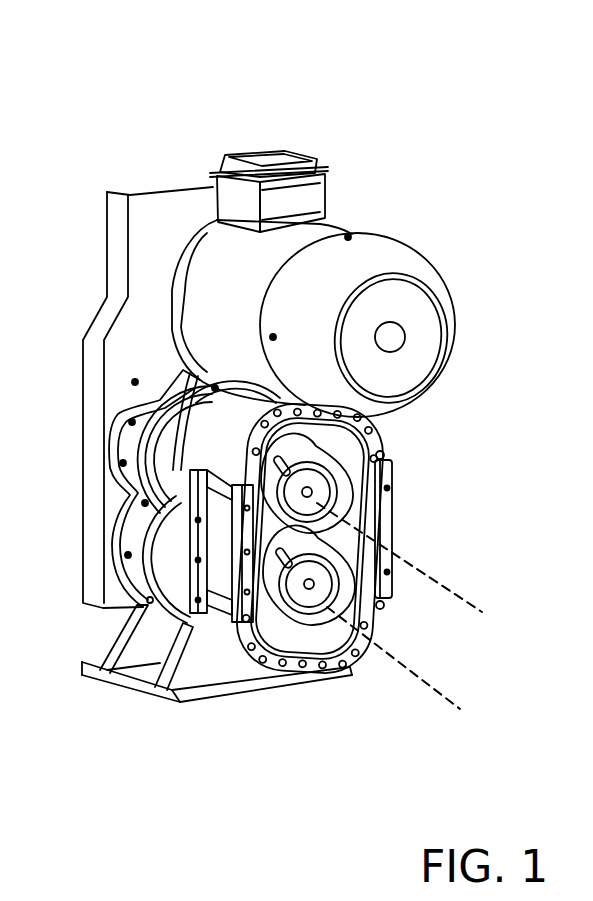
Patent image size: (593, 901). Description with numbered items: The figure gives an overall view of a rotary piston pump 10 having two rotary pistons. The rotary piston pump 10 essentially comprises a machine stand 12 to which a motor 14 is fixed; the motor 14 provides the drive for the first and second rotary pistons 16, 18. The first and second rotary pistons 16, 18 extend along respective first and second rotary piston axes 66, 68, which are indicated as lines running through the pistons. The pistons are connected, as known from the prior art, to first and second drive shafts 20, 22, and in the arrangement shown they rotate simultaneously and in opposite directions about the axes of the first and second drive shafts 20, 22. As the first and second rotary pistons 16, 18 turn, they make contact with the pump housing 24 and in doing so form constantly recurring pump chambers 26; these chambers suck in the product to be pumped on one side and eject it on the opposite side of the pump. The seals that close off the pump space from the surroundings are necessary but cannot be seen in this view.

The rotary piston pump 10 is at (242, 136).
The machine stand 12 is at (150, 212).
The motor 14 is at (353, 263).
The first rotary piston 16 is at (333, 505).
The second rotary piston 18 is at (384, 610).
The first drive shaft 20 is at (313, 473).
The second drive shaft 22 is at (322, 576).
The pump housing 24 is at (320, 672).
The pump chambers 26 is at (267, 653).
The first rotary piston axis 66 is at (440, 585).
The second rotary piston axis 68 is at (427, 688).